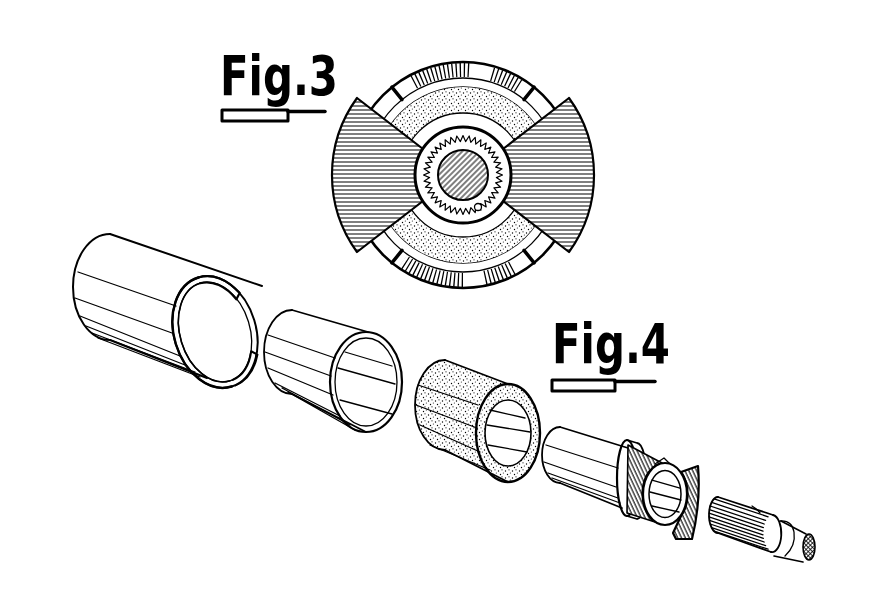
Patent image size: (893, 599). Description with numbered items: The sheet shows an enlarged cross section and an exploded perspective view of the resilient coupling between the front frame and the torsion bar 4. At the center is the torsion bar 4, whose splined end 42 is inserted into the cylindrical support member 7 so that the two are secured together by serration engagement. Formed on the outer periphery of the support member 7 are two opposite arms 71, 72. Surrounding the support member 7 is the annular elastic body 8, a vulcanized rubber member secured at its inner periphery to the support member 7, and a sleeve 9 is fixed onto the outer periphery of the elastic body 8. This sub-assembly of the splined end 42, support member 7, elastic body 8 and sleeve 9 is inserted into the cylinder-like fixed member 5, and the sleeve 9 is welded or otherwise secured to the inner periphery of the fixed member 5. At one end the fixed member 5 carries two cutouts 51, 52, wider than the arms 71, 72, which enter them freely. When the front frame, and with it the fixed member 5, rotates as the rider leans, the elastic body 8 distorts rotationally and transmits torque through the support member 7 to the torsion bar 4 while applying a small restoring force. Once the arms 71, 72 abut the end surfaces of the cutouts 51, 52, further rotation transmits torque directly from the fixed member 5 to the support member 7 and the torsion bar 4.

In FIG. 3, the torsion bar 4 is at (457, 193).
In FIG. 4, the torsion bar 4 is at (735, 497).
In FIG. 3, the splined end 42 is at (481, 210).
In FIG. 4, the splined end 42 is at (757, 510).
In FIG. 3, the fixed member 5 is at (493, 64).
In FIG. 4, the fixed member 5 is at (129, 350).
In FIG. 3, the cutout 51 is at (386, 102).
In FIG. 4, the cutout 51 is at (172, 344).
In FIG. 3, the cutout 52 is at (542, 102).
In FIG. 4, the cutout 52 is at (242, 381).
In FIG. 3, the support member 7 is at (438, 138).
In FIG. 4, the support member 7 is at (573, 488).
In FIG. 3, the arm 71 is at (340, 178).
In FIG. 4, the arm 71 is at (615, 507).
In FIG. 3, the arm 72 is at (583, 179).
In FIG. 4, the arm 72 is at (693, 540).
In FIG. 3, the elastic body 8 is at (515, 131).
In FIG. 4, the elastic body 8 is at (450, 453).
In FIG. 3, the sleeve 9 is at (417, 277).
In FIG. 4, the sleeve 9 is at (310, 408).